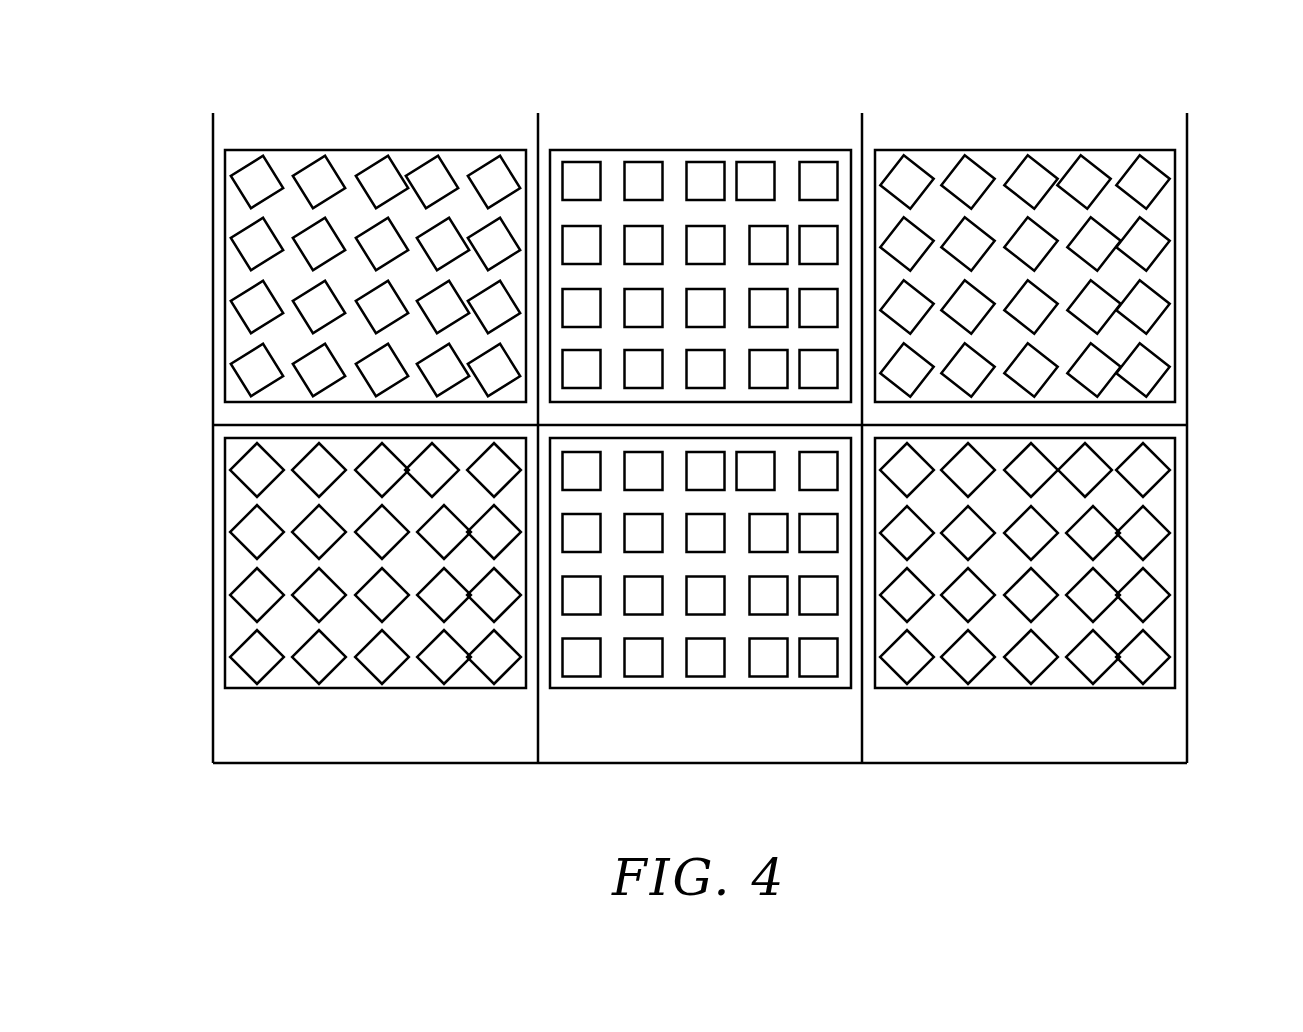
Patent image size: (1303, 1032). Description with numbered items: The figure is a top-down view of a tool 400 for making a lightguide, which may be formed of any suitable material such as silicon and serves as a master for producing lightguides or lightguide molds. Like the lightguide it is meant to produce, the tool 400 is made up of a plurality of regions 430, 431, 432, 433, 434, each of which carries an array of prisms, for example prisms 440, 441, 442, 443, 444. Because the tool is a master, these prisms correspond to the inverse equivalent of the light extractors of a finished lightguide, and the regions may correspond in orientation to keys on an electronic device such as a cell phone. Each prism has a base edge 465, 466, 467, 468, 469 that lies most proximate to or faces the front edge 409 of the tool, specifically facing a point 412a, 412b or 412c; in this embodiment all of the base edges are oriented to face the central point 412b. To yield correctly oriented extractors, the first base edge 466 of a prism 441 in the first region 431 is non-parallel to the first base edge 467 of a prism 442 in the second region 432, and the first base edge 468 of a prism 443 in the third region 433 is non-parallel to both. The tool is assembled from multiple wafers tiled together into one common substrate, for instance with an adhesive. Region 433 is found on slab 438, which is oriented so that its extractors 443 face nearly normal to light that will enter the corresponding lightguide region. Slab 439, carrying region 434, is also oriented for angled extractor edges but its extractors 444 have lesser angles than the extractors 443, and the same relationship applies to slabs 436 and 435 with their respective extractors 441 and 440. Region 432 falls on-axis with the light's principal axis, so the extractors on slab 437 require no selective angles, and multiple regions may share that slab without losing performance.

The tool 400 is at (255, 70).
The front edge 409 is at (1172, 763).
The point 412a is at (443, 763).
The central point 412b is at (699, 763).
The point 412c is at (967, 763).
The region 430 is at (328, 314).
The first region 431 is at (335, 627).
The second region 432 is at (695, 628).
The third region 433 is at (1071, 563).
The region 434 is at (1073, 276).
The slab 435 is at (237, 412).
The slab 436 is at (369, 737).
The slab 437 is at (617, 737).
The slab 438 is at (1072, 748).
The slab 439 is at (1162, 413).
The prism 440 is at (257, 363).
The prism 441 is at (250, 530).
The prism 442 is at (819, 663).
The prism 443 is at (1147, 470).
The prism 444 is at (1152, 183).
The base edge 465 is at (257, 268).
The first base edge 466 is at (268, 683).
The first base edge 467 is at (580, 677).
The first base edge 468 is at (1132, 615).
The base edge 469 is at (1135, 323).